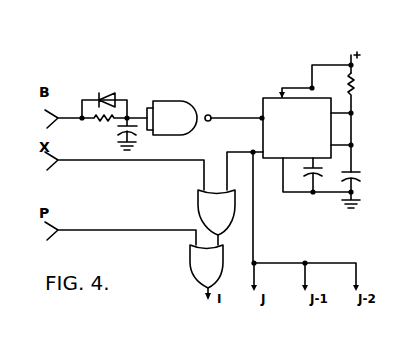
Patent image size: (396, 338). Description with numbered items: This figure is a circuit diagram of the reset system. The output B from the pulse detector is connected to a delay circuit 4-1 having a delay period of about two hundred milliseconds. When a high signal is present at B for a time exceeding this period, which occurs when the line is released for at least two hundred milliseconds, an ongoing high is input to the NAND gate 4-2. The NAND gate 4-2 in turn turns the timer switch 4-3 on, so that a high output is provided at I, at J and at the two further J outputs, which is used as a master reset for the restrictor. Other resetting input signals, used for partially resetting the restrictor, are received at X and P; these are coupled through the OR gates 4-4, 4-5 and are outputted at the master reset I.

The delay circuit 4-1 is at (134, 107).
The NAND gate 4-2 is at (182, 101).
The timer switch 4-3 is at (270, 99).
The OR gate 4-4 is at (200, 205).
The OR gate 4-5 is at (190, 268).